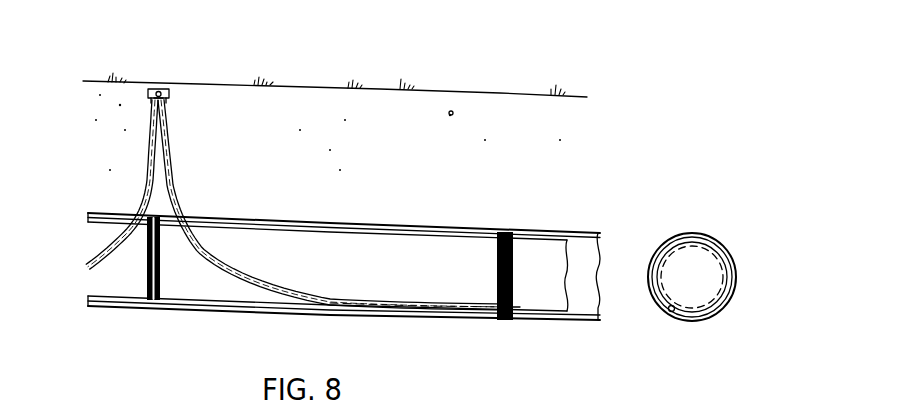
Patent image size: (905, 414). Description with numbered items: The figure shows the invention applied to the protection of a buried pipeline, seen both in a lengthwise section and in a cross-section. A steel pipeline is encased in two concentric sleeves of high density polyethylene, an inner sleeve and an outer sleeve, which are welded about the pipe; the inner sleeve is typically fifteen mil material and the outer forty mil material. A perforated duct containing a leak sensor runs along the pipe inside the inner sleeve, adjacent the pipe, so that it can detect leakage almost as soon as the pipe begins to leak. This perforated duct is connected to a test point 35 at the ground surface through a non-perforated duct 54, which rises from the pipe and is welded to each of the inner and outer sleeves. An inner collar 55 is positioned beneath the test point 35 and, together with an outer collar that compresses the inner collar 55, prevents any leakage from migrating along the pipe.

The test point 35 is at (170, 95).
The non-perforated duct 54 is at (172, 177).
The inner collar 55 is at (160, 291).